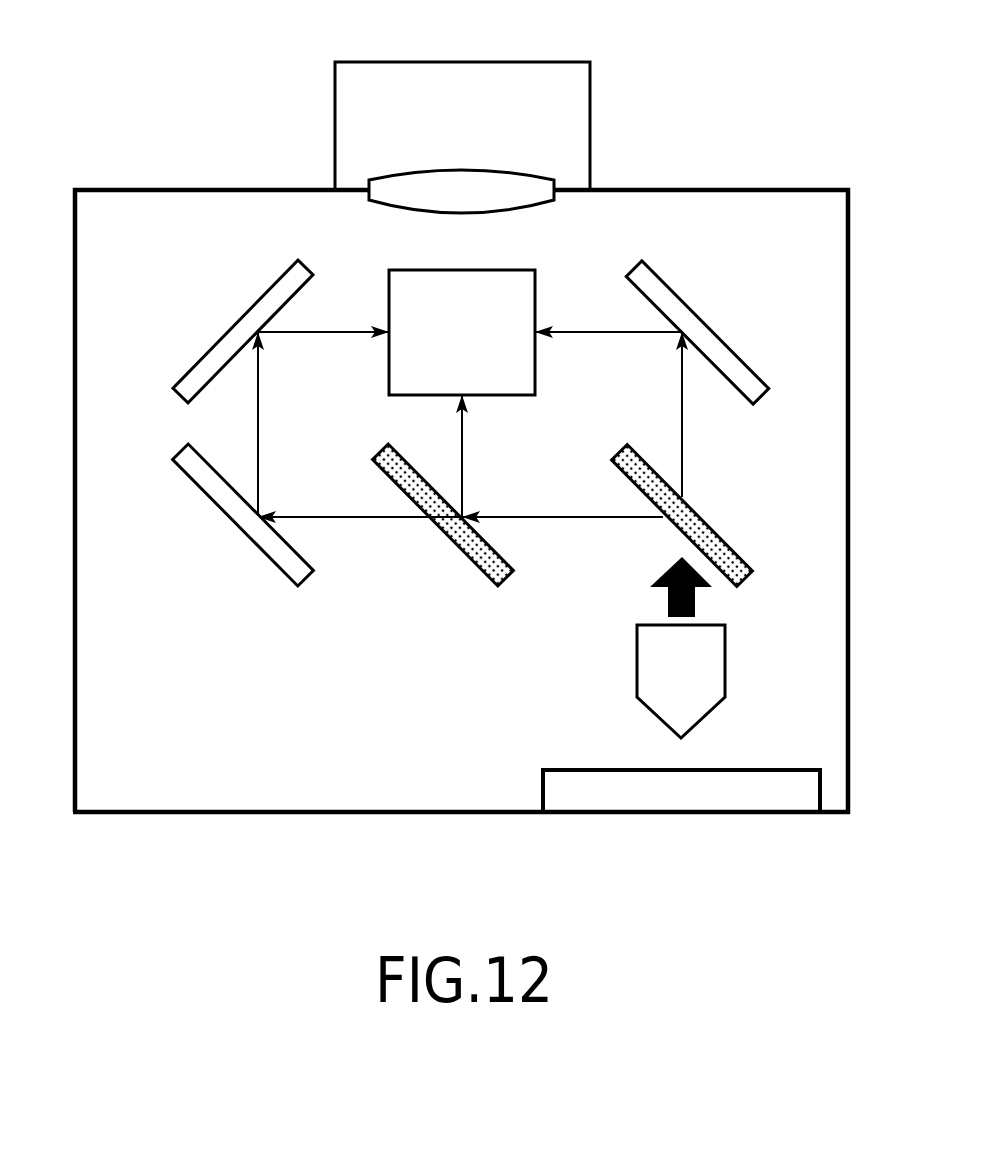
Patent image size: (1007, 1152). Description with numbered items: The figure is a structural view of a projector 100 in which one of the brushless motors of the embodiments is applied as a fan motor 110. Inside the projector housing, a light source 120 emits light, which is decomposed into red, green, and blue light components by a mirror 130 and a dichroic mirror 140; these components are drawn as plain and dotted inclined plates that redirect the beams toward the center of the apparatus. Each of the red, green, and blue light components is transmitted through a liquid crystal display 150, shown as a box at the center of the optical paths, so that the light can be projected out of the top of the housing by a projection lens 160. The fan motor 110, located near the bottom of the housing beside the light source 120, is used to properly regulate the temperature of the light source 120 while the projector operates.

The projector 100 is at (807, 43).
The fan motor 110 is at (583, 770).
The light source 120 is at (726, 658).
The mirror 130 is at (705, 322).
The dichroic mirror 140 is at (455, 545).
The liquid crystal display 150 is at (450, 270).
The projection lens 160 is at (462, 170).